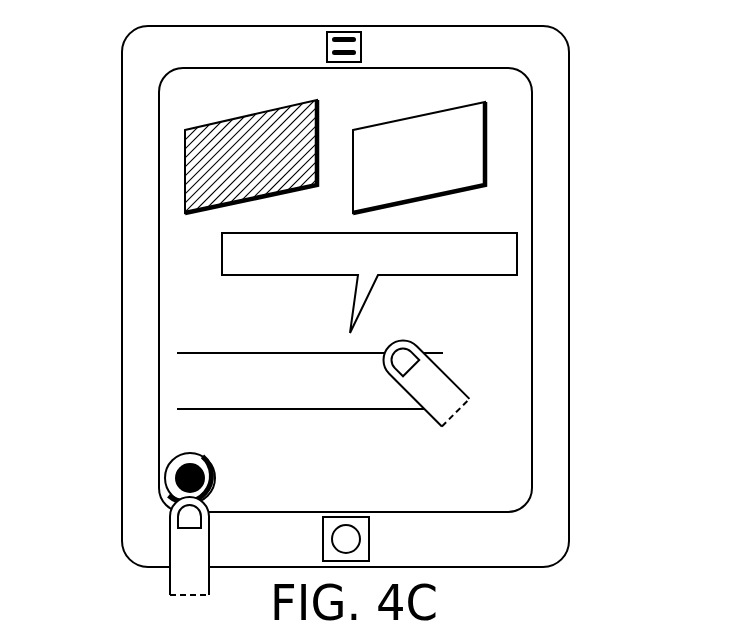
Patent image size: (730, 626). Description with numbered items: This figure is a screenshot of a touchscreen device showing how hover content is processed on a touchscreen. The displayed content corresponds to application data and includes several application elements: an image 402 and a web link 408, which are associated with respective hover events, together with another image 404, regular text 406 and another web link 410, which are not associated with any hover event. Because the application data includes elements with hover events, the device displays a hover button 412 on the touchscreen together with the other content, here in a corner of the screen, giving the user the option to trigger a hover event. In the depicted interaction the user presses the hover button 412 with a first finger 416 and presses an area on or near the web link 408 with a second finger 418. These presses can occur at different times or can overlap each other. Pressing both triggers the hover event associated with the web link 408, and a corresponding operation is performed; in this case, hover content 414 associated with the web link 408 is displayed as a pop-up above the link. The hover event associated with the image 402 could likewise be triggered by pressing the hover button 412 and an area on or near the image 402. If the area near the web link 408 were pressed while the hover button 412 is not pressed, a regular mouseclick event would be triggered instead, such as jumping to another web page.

The image 402 is at (184, 154).
The image 404 is at (487, 114).
The regular text 406 is at (177, 296).
The web link 408 is at (173, 343).
The web link 410 is at (173, 403).
The hover button 412 is at (172, 459).
The hover content 414 is at (479, 232).
The first finger 416 is at (170, 542).
The second finger 418 is at (448, 380).